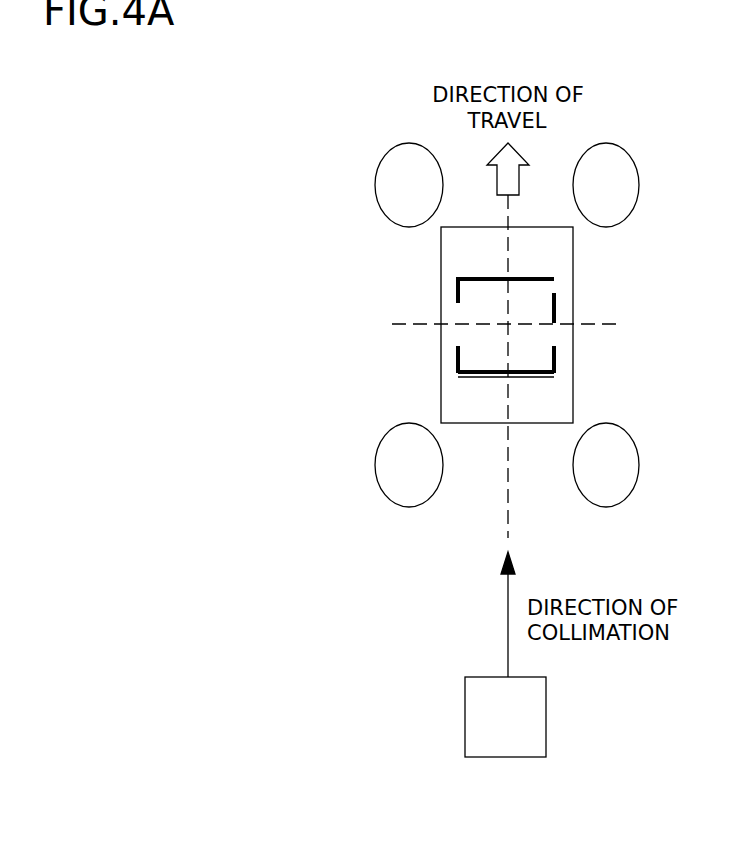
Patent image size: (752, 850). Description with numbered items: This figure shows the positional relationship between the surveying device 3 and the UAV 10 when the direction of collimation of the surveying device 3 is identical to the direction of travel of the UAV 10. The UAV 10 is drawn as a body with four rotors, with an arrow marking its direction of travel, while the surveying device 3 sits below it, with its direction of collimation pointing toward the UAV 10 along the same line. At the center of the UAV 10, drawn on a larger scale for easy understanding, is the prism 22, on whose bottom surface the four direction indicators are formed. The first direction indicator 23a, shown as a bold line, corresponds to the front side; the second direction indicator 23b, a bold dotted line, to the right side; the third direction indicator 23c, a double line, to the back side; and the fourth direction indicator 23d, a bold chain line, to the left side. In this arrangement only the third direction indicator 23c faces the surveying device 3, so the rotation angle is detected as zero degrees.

The UAV 10 is at (430, 301).
The prism 22 is at (540, 305).
The first direction indicator 23a is at (528, 277).
The second direction indicator 23b is at (556, 359).
The third direction indicator 23c is at (520, 376).
The fourth direction indicator 23d is at (457, 353).
The surveying device 3 is at (546, 717).